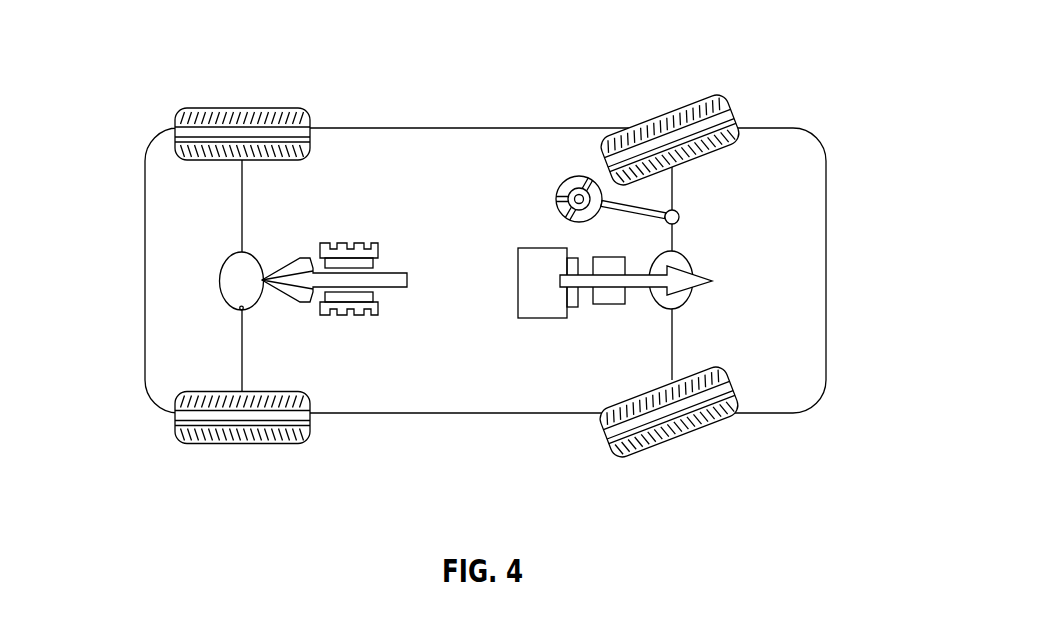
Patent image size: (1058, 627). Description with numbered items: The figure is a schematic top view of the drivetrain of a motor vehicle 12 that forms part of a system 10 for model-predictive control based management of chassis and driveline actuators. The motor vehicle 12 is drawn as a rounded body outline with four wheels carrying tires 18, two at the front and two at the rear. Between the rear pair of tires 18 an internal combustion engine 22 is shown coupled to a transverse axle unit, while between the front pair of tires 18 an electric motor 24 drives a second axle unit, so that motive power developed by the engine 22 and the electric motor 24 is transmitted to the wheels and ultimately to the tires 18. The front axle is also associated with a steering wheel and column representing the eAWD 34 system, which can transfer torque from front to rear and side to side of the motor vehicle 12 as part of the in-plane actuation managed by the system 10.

The system 10 is at (158, 87).
The motor vehicle 12 is at (838, 245).
The tires 18 is at (248, 108).
The internal combustion engine 22 is at (377, 315).
The electric motor 24 is at (543, 318).
The eAWD system 34 is at (688, 260).